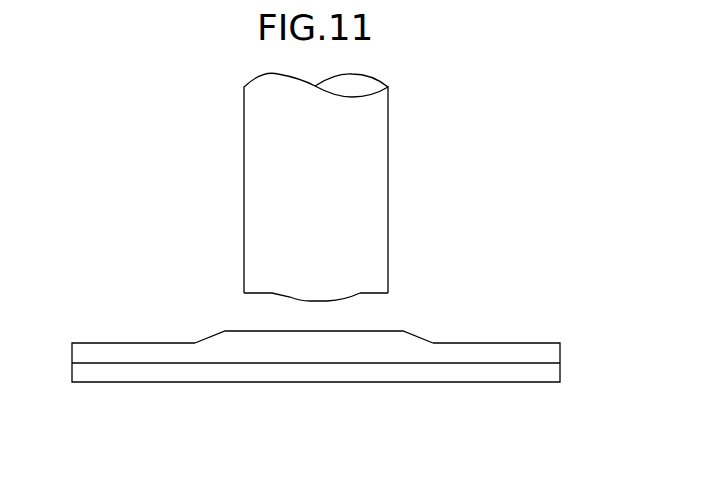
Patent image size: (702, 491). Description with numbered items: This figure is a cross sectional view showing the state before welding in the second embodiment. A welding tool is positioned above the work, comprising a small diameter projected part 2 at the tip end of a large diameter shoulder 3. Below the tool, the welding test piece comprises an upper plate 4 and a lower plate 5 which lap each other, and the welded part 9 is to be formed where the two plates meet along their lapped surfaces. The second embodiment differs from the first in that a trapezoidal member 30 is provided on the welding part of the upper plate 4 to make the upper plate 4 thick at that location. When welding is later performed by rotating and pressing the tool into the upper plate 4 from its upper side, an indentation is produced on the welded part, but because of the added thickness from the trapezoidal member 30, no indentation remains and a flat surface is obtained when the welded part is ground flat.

The projected part 2 is at (290, 299).
The shoulder 3 is at (388, 272).
The upper plate 4 is at (104, 343).
The lower plate 5 is at (101, 382).
The welded part 9 is at (313, 362).
The trapezoidal member 30 is at (418, 337).